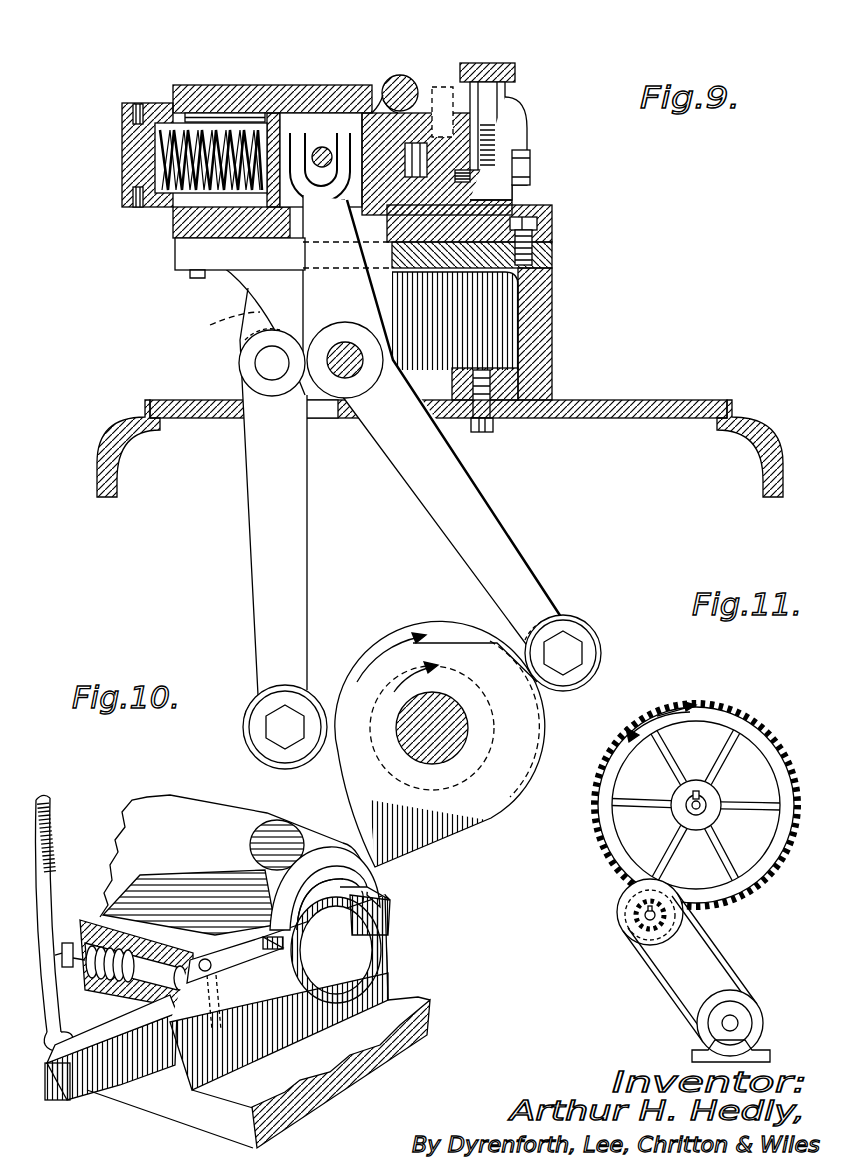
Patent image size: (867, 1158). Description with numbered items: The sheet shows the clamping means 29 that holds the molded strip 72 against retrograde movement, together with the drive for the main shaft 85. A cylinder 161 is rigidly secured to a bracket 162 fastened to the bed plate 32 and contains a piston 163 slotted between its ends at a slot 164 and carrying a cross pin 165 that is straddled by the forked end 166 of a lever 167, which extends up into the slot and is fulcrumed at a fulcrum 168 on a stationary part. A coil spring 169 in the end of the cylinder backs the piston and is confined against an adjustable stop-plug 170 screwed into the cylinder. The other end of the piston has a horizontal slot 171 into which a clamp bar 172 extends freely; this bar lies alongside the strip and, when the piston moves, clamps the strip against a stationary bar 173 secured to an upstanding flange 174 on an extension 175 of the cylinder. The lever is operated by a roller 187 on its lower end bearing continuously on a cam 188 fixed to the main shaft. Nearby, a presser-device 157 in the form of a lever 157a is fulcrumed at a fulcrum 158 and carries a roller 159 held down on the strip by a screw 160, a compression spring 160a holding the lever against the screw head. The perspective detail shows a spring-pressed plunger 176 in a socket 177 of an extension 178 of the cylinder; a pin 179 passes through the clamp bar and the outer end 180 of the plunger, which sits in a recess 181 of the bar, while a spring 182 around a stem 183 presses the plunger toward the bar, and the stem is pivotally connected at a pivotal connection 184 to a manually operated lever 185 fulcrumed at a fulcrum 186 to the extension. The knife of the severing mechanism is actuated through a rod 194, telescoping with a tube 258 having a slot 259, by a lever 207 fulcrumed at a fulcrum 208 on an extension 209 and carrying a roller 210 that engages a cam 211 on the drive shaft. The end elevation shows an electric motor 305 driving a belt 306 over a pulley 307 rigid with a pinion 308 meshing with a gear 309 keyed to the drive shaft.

In FIG. 9, the clamping means 29 is at (249, 80).
In FIG. 10, the clamping means 29 is at (215, 812).
In FIG. 9, the bed plate 32 is at (637, 427).
In FIG. 9, the strip 72 is at (469, 236).
In FIG. 9, the main shaft 85 is at (432, 728).
In FIG. 11, the main shaft 85 is at (700, 805).
In FIG. 9, the presser-device 157 is at (514, 112).
In FIG. 9, the lever 157a is at (508, 105).
In FIG. 9, the fulcrum 158 is at (520, 157).
In FIG. 9, the roller 159 is at (441, 87).
In FIG. 9, the screw 160 is at (512, 63).
In FIG. 9, the compression spring 160a is at (503, 137).
In FIG. 9, the cylinder 161 is at (193, 90).
In FIG. 10, the cylinder 161 is at (148, 812).
In FIG. 9, the bracket 162 is at (545, 296).
In FIG. 9, the piston 163 is at (247, 120).
In FIG. 10, the piston 163 is at (340, 887).
In FIG. 9, the slot 164 is at (330, 137).
In FIG. 9, the cross pin 165 is at (321, 160).
In FIG. 9, the forked end 166 is at (326, 145).
In FIG. 9, the lever 167 is at (537, 520).
In FIG. 9, the fulcrum 168 is at (345, 360).
In FIG. 9, the coil spring 169 is at (167, 160).
In FIG. 9, the adjustable stop-plug 170 is at (124, 143).
In FIG. 9, the slot 171 is at (437, 164).
In FIG. 10, the slot 171 is at (320, 904).
In FIG. 9, the clamp bar 172 is at (398, 160).
In FIG. 10, the clamp bar 172 is at (360, 930).
In FIG. 9, the stationary bar 173 is at (500, 202).
In FIG. 9, the upstanding flange 174 is at (500, 185).
In FIG. 9, the extension 175 is at (455, 321).
In FIG. 10, the extension 175 is at (287, 1112).
In FIG. 10, the spring-pressed plunger 176 is at (155, 970).
In FIG. 10, the socket 177 is at (107, 987).
In FIG. 10, the extension 178 is at (128, 907).
In FIG. 10, the pin 179 is at (273, 942).
In FIG. 10, the outer end 180 is at (217, 1007).
In FIG. 10, the recess 181 is at (217, 985).
In FIG. 10, the spring 182 is at (100, 943).
In FIG. 10, the stem 183 is at (78, 942).
In FIG. 10, the pivotal connection 184 is at (47, 975).
In FIG. 10, the manually operated lever 185 is at (47, 830).
In FIG. 10, the fulcrum 186 is at (90, 1050).
In FIG. 9, the roller 187 is at (583, 620).
In FIG. 9, the cam 188 is at (545, 725).
In FIG. 9, the rod 194 is at (402, 80).
In FIG. 9, the lever 207 is at (253, 300).
In FIG. 9, the fulcrum 208 is at (270, 361).
In FIG. 9, the extension 209 is at (224, 326).
In FIG. 9, the roller 210 is at (245, 735).
In FIG. 9, the cam 211 is at (345, 800).
In FIG. 9, the tube 258 is at (388, 108).
In FIG. 9, the slot 259 is at (382, 108).
In FIG. 11, the electric motor 305 is at (745, 1010).
In FIG. 11, the belt 306 is at (697, 942).
In FIG. 11, the pulley 307 is at (625, 938).
In FIG. 11, the pinion 308 is at (640, 914).
In FIG. 11, the gear 309 is at (598, 868).